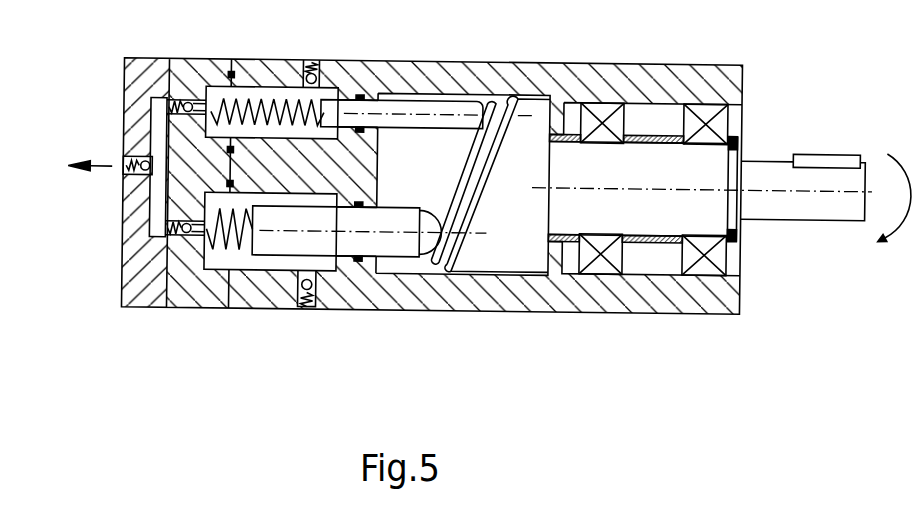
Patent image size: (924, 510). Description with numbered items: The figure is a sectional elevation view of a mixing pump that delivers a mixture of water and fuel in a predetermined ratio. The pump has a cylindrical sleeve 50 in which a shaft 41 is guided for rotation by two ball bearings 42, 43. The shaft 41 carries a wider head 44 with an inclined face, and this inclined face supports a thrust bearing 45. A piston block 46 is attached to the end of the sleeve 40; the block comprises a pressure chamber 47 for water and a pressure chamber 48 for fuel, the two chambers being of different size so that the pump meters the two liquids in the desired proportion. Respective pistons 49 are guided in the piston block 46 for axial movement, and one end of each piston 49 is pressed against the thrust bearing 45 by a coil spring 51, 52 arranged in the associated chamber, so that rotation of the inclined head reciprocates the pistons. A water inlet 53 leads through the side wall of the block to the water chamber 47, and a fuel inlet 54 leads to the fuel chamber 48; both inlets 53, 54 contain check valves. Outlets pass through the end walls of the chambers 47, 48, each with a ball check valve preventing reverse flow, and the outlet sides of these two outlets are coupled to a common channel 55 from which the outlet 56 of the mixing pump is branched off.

The sleeve 40 is at (722, 292).
The shaft 41 is at (739, 222).
The ball bearing 42 is at (589, 268).
The ball bearing 43 is at (703, 265).
The wider head 44 is at (536, 122).
The thrust bearing 45 is at (485, 96).
The piston block 46 is at (161, 298).
The pressure chamber for water 47 is at (262, 97).
The pressure chamber for fuel 48 is at (223, 258).
The piston 49 is at (421, 100).
The cylindrical sleeve 50 is at (401, 258).
The coil spring 51 is at (227, 75).
The coil spring 52 is at (200, 265).
The water inlet 53 is at (312, 64).
The fuel inlet 54 is at (316, 300).
The common channel 55 is at (155, 209).
The outlet 56 is at (124, 164).